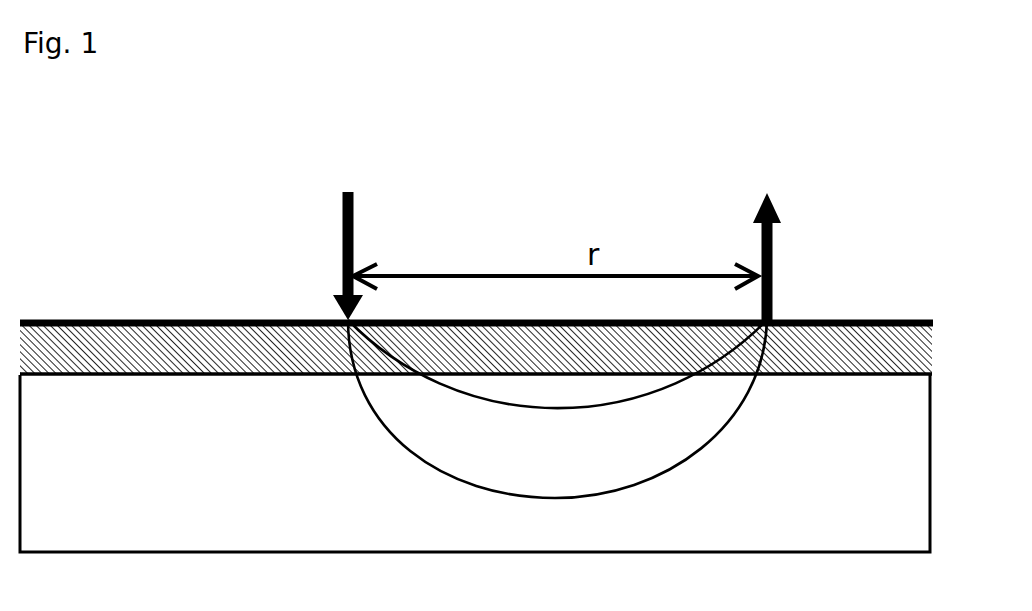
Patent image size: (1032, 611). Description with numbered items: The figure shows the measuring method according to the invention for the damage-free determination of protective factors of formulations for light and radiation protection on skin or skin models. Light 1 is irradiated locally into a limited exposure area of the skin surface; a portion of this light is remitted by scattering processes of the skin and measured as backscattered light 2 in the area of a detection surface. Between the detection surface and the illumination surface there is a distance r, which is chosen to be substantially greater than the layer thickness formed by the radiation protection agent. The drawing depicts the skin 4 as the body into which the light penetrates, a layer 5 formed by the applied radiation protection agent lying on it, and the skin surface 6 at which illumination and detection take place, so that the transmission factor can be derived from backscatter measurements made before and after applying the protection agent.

The incident beam 1 is at (333, 228).
The emitted beam 2 is at (778, 255).
The substrate body 4 is at (805, 490).
The surface layer 5 is at (123, 347).
The surface 6 is at (185, 318).